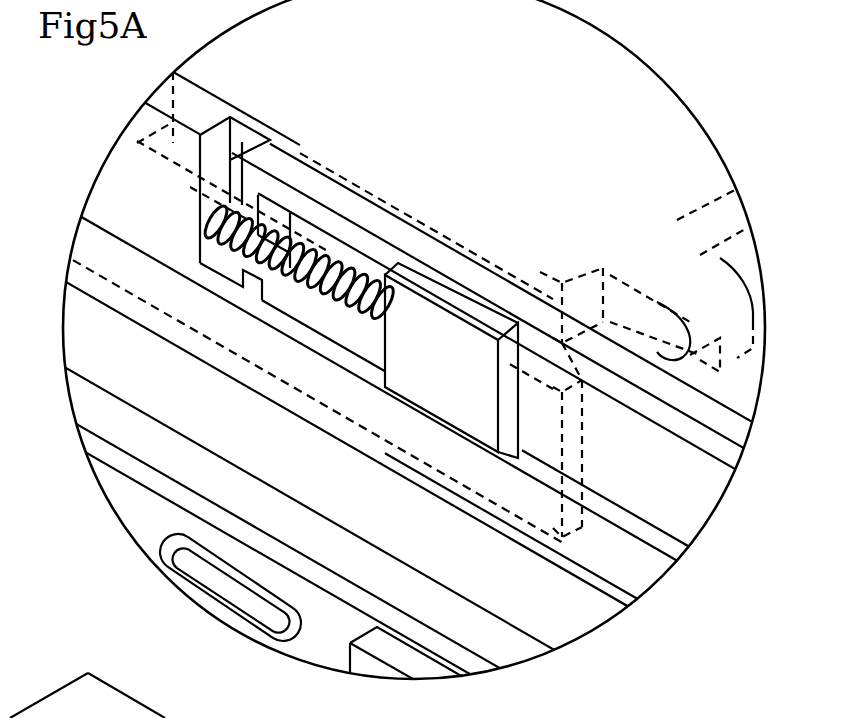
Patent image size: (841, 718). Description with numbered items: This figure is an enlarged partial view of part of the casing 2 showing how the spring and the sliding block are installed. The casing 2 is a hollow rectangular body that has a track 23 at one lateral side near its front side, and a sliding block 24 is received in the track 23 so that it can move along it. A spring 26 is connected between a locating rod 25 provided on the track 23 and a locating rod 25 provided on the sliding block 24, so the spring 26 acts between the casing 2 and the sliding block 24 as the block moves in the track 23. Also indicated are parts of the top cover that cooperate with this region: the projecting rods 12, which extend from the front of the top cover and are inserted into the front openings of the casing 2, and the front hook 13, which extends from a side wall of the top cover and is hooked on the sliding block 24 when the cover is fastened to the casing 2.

The casing 2 is at (563, 617).
The projecting rods 12 is at (681, 271).
The front hook 13 is at (575, 413).
The track 23 is at (313, 310).
The sliding block 24 is at (472, 352).
The locating rod 25 is at (266, 150).
The spring 26 is at (348, 248).